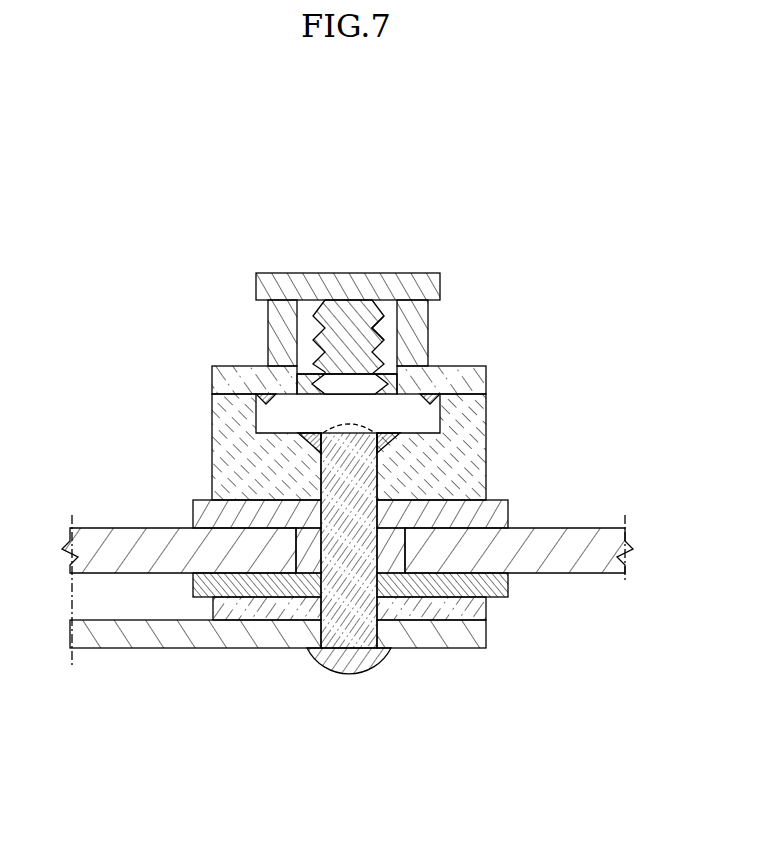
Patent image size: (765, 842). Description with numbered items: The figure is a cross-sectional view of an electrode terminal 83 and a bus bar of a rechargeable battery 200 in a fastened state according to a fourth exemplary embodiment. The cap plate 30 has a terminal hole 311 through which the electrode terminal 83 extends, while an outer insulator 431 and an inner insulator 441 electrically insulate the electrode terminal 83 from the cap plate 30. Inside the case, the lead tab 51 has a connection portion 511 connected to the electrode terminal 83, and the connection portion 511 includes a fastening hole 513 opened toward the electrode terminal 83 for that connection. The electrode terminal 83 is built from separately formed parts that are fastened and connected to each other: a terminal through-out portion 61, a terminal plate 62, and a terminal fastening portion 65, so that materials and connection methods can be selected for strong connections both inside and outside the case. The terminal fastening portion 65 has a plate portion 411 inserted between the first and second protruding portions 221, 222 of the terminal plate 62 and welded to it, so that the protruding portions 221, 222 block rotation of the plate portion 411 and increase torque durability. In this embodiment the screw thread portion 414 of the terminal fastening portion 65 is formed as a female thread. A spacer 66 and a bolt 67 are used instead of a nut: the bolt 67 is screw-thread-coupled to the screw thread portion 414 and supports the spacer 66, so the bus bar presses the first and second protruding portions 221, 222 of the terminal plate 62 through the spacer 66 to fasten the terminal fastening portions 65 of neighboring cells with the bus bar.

The rechargeable battery 200 is at (365, 110).
The electrode terminal 83 is at (444, 254).
The bolt 67 is at (300, 288).
The spacer 66 is at (268, 321).
The terminal fastening portion 65 is at (444, 347).
The screw thread portion 414 is at (374, 346).
The plate portion 411 is at (405, 366).
The terminal plate 62 is at (487, 484).
The first protruding portion 221 is at (258, 398).
The second protruding portion 222 is at (442, 400).
The terminal hole 311 is at (308, 522).
The outer insulator 431 is at (192, 508).
The cap plate 30 is at (590, 555).
The inner insulator 441 is at (230, 595).
The connection portion 511 is at (268, 625).
The lead tab 51 is at (128, 655).
The terminal through-out portion 61 is at (355, 593).
The fastening hole 513 is at (372, 660).